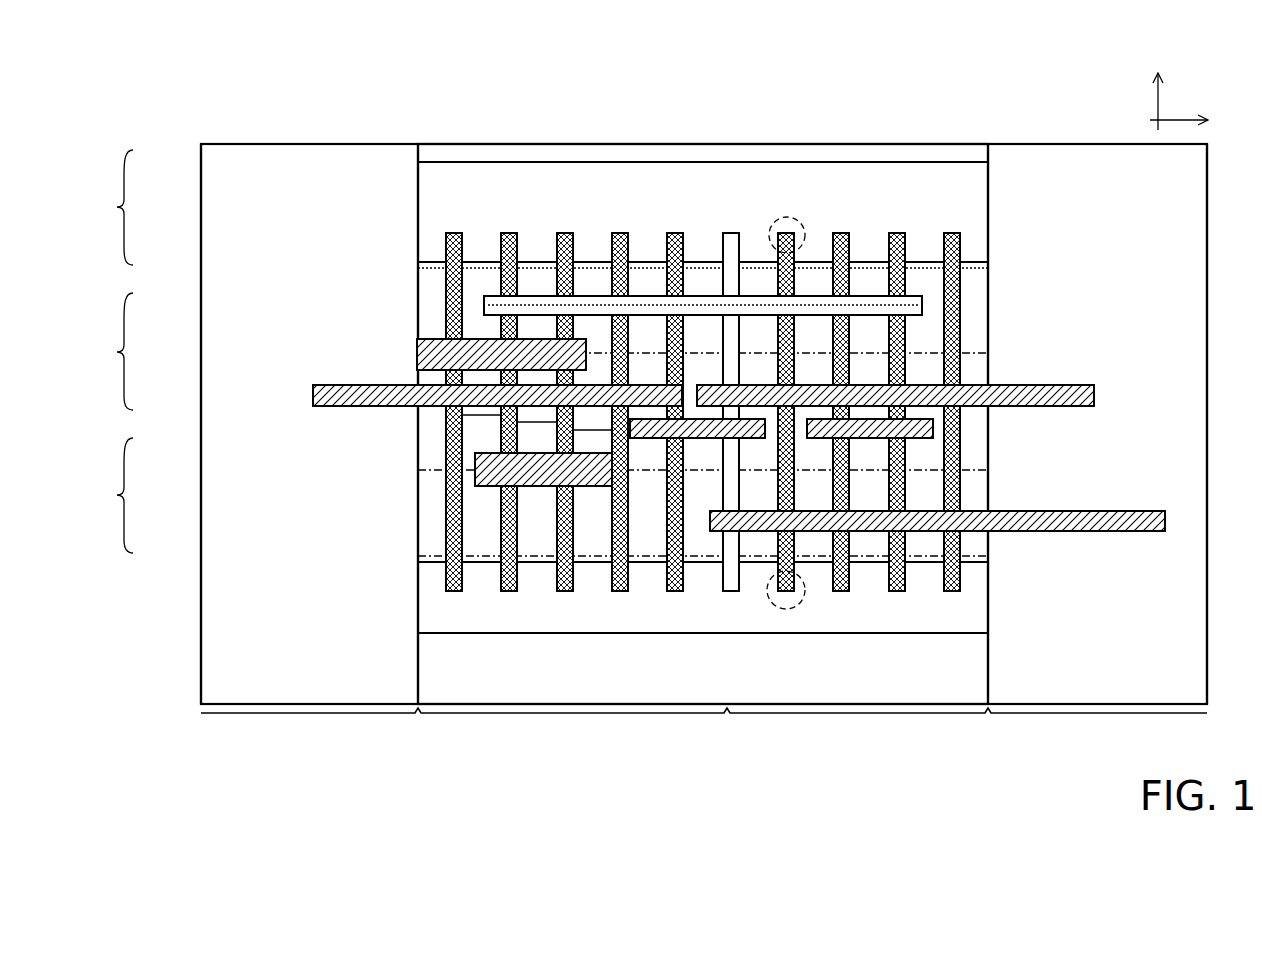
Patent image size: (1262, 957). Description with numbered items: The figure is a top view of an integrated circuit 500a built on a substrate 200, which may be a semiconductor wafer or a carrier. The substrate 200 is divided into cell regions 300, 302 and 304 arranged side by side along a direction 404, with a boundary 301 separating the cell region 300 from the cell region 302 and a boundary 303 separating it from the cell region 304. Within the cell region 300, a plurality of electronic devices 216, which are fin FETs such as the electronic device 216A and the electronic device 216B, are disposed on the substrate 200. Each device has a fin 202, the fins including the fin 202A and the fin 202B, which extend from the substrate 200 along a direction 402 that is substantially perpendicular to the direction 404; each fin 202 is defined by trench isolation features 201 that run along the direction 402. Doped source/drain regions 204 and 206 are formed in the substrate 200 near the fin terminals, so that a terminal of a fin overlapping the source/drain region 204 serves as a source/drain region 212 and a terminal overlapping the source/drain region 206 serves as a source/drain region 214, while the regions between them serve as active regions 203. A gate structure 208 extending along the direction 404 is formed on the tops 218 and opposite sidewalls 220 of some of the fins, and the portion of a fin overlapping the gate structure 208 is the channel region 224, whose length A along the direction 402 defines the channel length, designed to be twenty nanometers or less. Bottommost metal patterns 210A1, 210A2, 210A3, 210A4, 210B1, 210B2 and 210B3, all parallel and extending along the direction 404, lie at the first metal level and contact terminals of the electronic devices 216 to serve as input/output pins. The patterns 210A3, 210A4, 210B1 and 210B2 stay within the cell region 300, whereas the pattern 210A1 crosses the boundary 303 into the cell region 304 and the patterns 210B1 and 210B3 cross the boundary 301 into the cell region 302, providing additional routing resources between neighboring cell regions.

The integrated circuit 500a is at (243, 105).
The substrate 200 is at (947, 672).
The trench isolation features 201 is at (587, 442).
The fin 202 is at (619, 233).
The fin 202A is at (673, 233).
The fin 202B is at (730, 248).
The active regions 203 is at (584, 262).
The source/drain region 204 is at (482, 214).
The source/drain region 206 is at (900, 626).
The gate structure 208 is at (537, 296).
The bottommost metal pattern 210A1 is at (342, 385).
The bottommost metal pattern 210A2 is at (657, 438).
The bottommost metal pattern 210A3 is at (545, 487).
The bottommost metal pattern 210A4 is at (477, 339).
The bottommost metal pattern 210B1 is at (1062, 385).
The bottommost metal pattern 210B2 is at (865, 438).
The bottommost metal pattern 210B3 is at (1035, 531).
The source/drain region 212 is at (787, 217).
The source/drain region 214 is at (786, 610).
The electronic devices 216 is at (122, 208).
The electronic device 216A is at (124, 353).
The electronic device 216B is at (124, 497).
The tops 218 is at (732, 250).
The opposite sidewalls 220 is at (722, 255).
The channel region 224 is at (803, 293).
The cell region 300 is at (703, 447).
The boundary 301 is at (990, 285).
The cell region 302 is at (1140, 447).
The boundary 303 is at (415, 285).
The cell region 304 is at (268, 447).
The direction 402 is at (1158, 81).
The direction 404 is at (1206, 119).
The length A is at (843, 305).